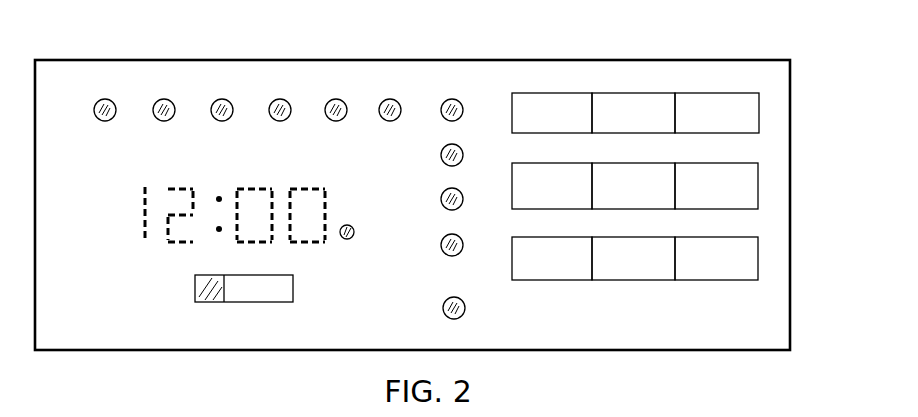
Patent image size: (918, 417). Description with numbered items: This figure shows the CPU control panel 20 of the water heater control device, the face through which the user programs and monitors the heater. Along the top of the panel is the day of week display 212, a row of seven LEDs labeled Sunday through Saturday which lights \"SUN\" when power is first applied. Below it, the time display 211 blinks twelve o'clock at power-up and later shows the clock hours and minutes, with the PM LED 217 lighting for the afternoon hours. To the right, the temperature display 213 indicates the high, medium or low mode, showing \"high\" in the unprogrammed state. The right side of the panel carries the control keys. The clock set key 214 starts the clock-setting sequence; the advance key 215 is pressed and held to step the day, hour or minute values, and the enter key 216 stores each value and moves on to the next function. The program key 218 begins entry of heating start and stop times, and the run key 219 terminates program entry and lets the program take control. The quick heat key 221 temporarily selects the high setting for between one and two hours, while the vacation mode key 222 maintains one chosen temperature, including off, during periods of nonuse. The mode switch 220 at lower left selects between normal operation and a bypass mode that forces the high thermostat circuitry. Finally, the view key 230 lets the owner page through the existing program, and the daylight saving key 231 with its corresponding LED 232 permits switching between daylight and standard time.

The CPU control panel 20 is at (803, 58).
The time display 211 is at (134, 236).
The day of week display 212 is at (463, 106).
The temperature display 213 is at (463, 238).
The clock set key 214 is at (583, 100).
The advance key 215 is at (742, 100).
The enter key 216 is at (749, 187).
The PM LED 217 is at (354, 232).
The program key 218 is at (667, 100).
The run key 219 is at (568, 272).
The mode switch 220 is at (212, 300).
The quick heat key 221 is at (658, 175).
The vacation mode key 222 is at (578, 198).
The view key 230 is at (658, 262).
The daylight saving key 231 is at (745, 262).
The daylight saving LED 232 is at (465, 306).